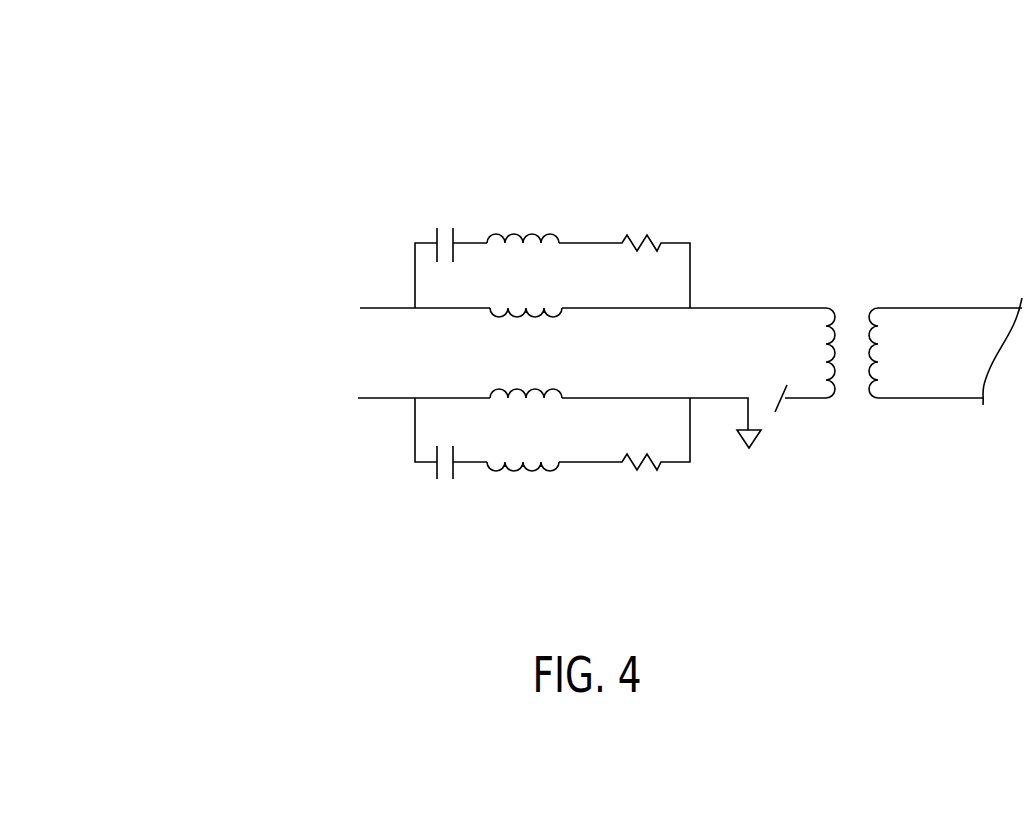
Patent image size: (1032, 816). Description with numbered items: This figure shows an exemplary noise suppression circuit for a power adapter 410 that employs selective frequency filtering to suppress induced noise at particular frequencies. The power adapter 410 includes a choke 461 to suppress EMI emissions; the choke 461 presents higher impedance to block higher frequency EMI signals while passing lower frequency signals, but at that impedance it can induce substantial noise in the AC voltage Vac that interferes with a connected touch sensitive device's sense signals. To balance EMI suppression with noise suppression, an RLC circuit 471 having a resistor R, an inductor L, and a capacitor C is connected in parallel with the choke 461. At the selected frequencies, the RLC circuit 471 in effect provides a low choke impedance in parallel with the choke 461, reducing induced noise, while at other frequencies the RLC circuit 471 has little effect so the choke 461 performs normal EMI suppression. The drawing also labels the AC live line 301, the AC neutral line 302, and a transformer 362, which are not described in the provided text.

The power adapter 410 is at (206, 158).
The AC live line 301 is at (375, 307).
The AC neutral line 302 is at (388, 400).
The choke 461 is at (527, 322).
The RLC circuit 471 is at (677, 520).
The transformer 362 is at (856, 306).